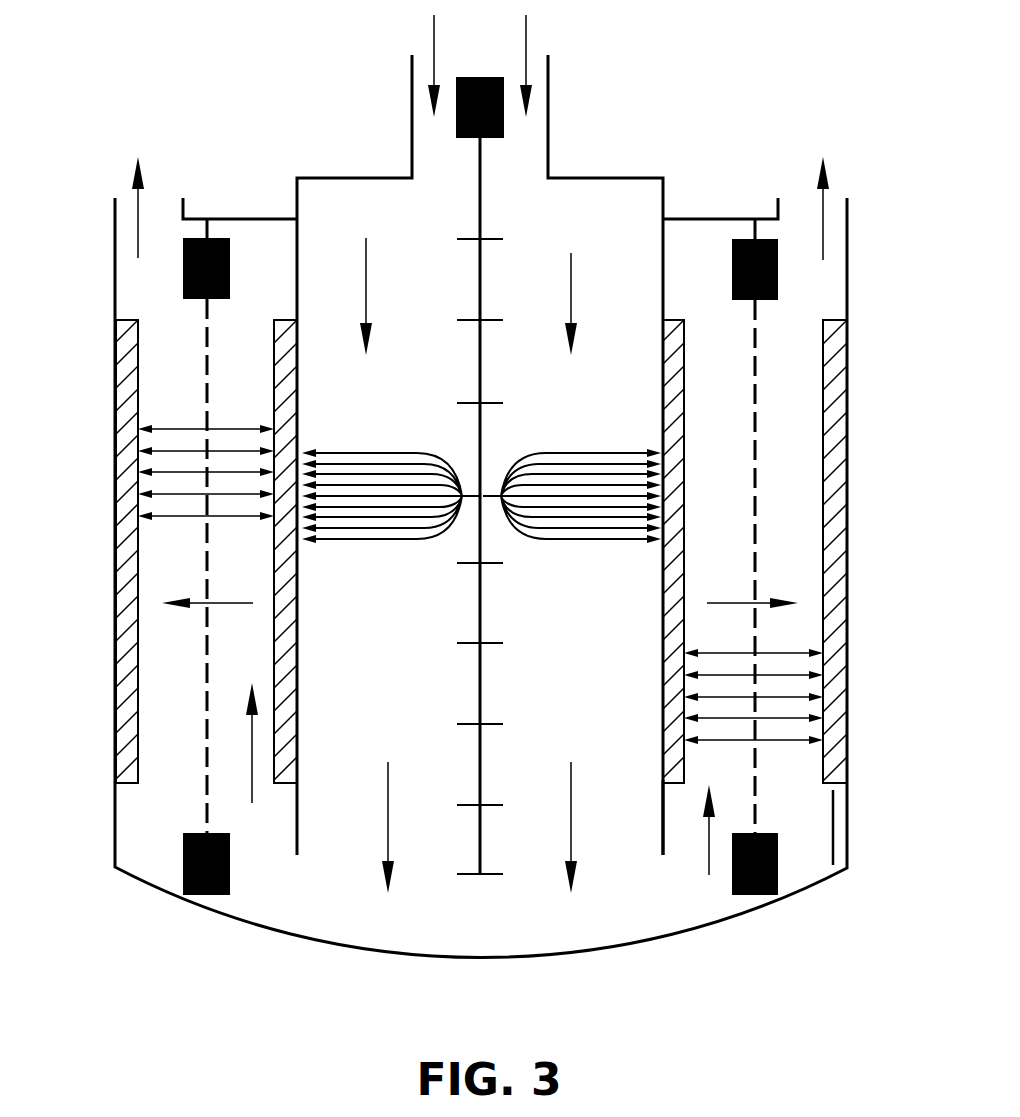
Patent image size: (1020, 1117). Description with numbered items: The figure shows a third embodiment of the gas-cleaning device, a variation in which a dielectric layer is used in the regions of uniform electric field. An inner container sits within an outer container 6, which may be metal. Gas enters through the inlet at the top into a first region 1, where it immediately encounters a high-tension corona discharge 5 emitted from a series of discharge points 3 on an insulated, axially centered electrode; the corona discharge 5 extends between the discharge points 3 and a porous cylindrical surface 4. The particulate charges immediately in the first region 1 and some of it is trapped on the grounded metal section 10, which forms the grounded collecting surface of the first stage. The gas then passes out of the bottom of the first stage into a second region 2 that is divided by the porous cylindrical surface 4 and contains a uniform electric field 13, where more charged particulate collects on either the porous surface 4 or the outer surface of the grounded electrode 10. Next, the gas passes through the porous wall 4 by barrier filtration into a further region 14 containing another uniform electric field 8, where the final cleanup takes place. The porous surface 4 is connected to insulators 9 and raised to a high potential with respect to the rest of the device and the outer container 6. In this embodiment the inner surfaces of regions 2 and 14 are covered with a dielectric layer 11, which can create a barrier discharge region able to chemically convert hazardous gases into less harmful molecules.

The first region 1 is at (612, 660).
The second region 2 is at (222, 742).
The discharge points 3 is at (504, 643).
The porous cylindrical surface 4 is at (748, 474).
The corona discharge 5 is at (392, 543).
The outer container 6 is at (852, 805).
The uniform electric field 8 is at (175, 517).
The insulators 9 is at (732, 265).
The grounded metal section 10 is at (663, 842).
The dielectric layer 11 is at (665, 696).
The uniform electric field 13 is at (227, 517).
The second region of uniform electric field 14 is at (175, 655).